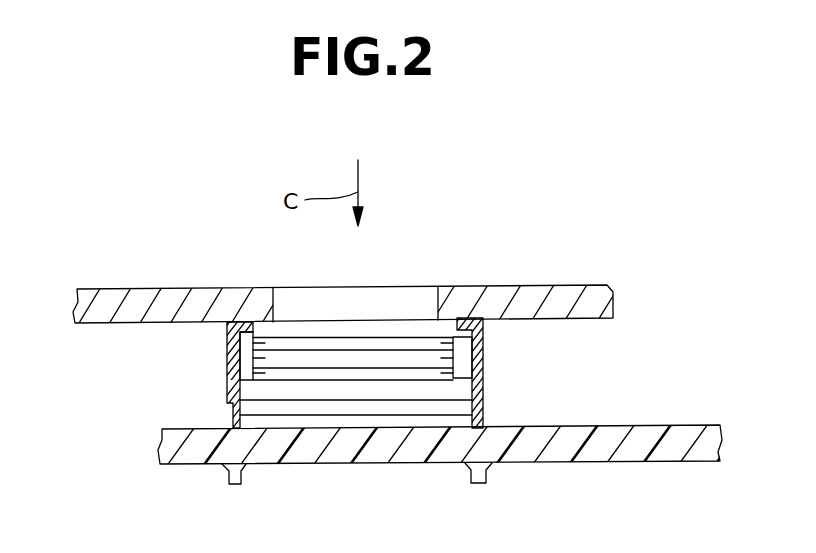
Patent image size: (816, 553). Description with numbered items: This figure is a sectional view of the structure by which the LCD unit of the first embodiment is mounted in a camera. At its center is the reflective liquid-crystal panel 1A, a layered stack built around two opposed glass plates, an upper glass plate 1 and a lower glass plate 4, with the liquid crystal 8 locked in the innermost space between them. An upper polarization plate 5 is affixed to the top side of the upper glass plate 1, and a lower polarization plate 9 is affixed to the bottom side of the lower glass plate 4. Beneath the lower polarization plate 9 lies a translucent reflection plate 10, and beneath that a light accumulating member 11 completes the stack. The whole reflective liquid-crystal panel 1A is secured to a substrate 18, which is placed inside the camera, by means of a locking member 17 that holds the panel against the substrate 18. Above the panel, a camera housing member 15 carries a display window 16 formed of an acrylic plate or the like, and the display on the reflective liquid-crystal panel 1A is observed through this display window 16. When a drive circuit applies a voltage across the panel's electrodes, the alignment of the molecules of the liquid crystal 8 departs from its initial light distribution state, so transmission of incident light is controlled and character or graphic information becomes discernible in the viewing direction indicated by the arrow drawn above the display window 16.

The upper glass plate 1 is at (252, 360).
The reflective liquid-crystal panel 1A is at (554, 344).
The lower glass plate 4 is at (235, 380).
The upper polarization plate 5 is at (483, 347).
The liquid crystal 8 is at (260, 358).
The lower polarization plate 9 is at (453, 388).
The translucent reflection plate 10 is at (368, 407).
The light accumulating member 11 is at (290, 429).
The camera housing member 15 is at (557, 296).
The display window 16 is at (428, 287).
The locking member 17 is at (483, 418).
The substrate 18 is at (578, 452).